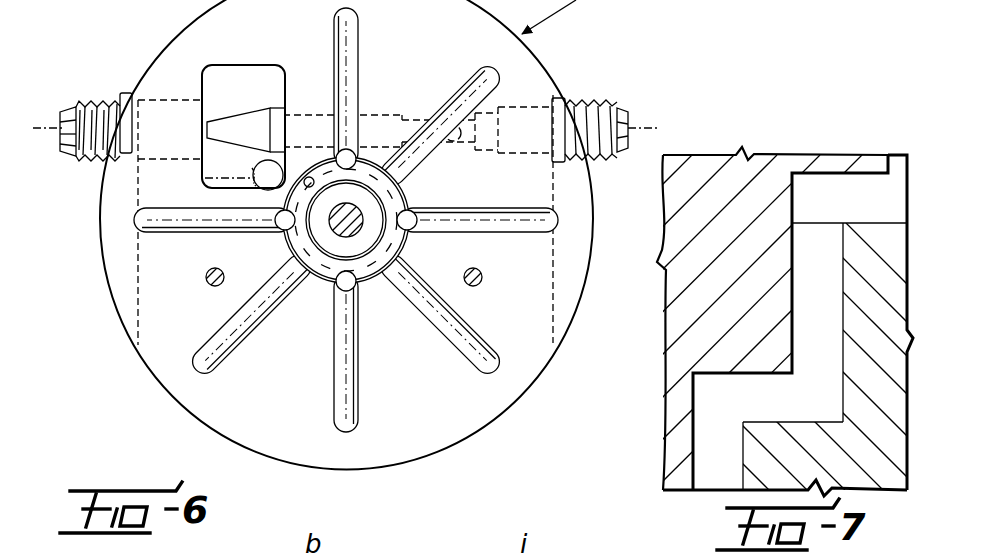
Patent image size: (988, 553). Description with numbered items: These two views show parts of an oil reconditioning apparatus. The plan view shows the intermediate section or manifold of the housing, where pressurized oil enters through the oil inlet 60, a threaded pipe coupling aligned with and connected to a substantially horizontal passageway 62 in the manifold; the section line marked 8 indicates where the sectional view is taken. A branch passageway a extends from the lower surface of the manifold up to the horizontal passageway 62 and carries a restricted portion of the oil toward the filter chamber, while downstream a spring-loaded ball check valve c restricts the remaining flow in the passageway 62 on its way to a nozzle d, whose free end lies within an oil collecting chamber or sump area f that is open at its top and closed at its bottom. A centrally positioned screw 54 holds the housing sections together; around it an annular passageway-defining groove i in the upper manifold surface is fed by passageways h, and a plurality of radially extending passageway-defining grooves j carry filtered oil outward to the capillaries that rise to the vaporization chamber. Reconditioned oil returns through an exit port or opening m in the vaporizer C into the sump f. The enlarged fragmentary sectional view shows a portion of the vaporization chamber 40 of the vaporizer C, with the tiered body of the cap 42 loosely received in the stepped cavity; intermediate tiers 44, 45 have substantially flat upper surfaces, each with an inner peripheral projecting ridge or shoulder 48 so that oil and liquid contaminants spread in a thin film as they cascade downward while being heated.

In FIG. 6, the section line 8- 8 is at (35, 128).
In FIG. 6, the oil inlet 60 is at (606, 98).
In FIG. 6, the horizontal passageway 62 is at (418, 117).
In FIG. 6, the screw 54 is at (363, 229).
In FIG. 6, the radially extending passageway-defining grooves j is at (201, 226).
In FIG. 6, the oil collecting chamber or sump area f is at (252, 66).
In FIG. 6, the nozzle d is at (243, 122).
In FIG. 6, the exit port or opening m is at (203, 178).
In FIG. 6, the passageways h is at (400, 200).
In FIG. 6, the annular passageway-defining groove i is at (322, 277).
In FIG. 6, the spring-loaded ball check valve c is at (373, 112).
In FIG. 6, the branch passageway a is at (458, 136).
In FIG. 7, the vaporization chamber closure member or cap 42 is at (773, 152).
In FIG. 7, the vaporization chamber 40 is at (838, 202).
In FIG. 7, the inner peripheral projecting ridge or shoulder 48 is at (850, 226).
In FIG. 7, the intermediate tier 44 is at (884, 226).
In FIG. 7, the vaporizer C is at (838, 296).
In FIG. 7, the intermediate tier 45 is at (790, 414).